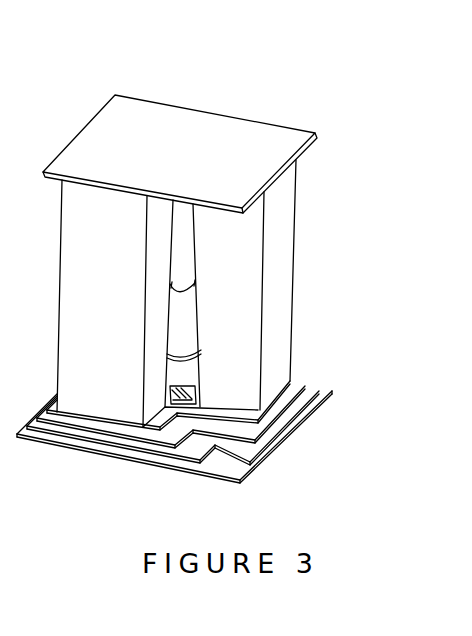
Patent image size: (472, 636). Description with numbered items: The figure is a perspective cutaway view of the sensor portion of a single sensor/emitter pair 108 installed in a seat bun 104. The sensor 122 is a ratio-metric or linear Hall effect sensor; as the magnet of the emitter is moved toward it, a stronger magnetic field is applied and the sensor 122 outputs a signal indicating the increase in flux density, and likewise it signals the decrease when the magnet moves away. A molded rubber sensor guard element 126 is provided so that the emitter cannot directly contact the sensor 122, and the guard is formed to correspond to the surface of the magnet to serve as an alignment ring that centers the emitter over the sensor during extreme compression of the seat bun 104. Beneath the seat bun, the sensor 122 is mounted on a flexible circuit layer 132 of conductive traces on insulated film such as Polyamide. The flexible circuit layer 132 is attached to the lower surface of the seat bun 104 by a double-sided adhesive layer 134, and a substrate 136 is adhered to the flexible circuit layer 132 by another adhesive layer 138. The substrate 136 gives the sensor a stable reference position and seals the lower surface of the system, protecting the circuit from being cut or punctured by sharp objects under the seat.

The sensor/emitter pair 108 is at (235, 83).
The seat bun 104 is at (280, 243).
The magnetic field sensor 122 is at (177, 386).
The sensor guard element 126 is at (187, 397).
The adhesive layer 134 is at (258, 416).
The flexible circuit layer 132 is at (234, 428).
The adhesive layer 138 is at (222, 444).
The substrate 136 is at (215, 463).